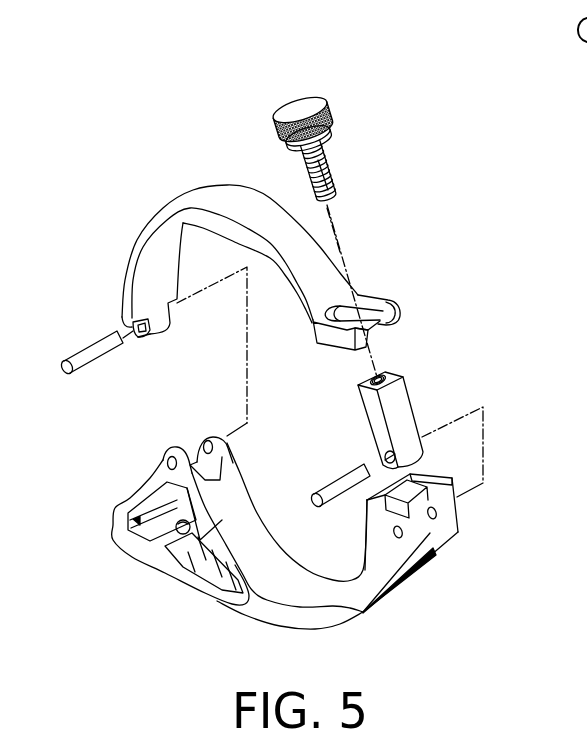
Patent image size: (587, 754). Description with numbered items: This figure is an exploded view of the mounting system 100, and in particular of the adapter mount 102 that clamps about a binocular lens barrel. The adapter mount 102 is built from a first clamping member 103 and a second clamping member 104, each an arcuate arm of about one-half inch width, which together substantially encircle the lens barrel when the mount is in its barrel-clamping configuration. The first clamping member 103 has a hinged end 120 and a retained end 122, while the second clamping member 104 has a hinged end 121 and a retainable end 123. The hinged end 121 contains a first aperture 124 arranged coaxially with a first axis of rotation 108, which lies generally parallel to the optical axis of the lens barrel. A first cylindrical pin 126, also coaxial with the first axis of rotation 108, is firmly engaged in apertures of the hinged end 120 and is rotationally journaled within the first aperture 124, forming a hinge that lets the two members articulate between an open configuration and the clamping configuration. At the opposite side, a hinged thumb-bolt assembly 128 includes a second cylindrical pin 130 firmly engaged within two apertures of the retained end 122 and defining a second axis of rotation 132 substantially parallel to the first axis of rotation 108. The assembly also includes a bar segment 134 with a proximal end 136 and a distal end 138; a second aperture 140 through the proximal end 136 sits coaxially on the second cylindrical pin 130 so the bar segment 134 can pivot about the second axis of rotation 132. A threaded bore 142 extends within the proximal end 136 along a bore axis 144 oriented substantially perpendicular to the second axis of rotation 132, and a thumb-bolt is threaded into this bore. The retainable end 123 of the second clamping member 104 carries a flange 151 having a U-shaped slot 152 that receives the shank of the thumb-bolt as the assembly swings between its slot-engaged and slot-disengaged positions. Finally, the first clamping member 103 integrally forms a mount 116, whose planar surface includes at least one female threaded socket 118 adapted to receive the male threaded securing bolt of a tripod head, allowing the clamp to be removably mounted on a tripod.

The clamp assembly 100 is at (148, 138).
The adapter mount 102 is at (131, 175).
The first clamping member 103 is at (407, 585).
The second clamping member 104 is at (133, 247).
The first axis of rotation 108 is at (132, 327).
The mount 116 is at (142, 613).
The female threaded socket 118 is at (163, 565).
The hinged end 120 is at (170, 448).
The hinged end 121 is at (153, 337).
The retained end 122 is at (462, 522).
The retainable end 123 is at (358, 295).
The first aperture 124 is at (140, 340).
The first cylindrical pin 126 is at (107, 342).
The hinged thumb-bolt assembly 128 is at (268, 45).
The second cylindrical pin 130 is at (343, 475).
The second axis of rotation 132 is at (457, 413).
The bar segment 134 is at (418, 412).
The proximal end 136 is at (418, 459).
The distal end 138 is at (410, 398).
The second aperture 140 is at (380, 456).
The threaded bore 142 is at (363, 377).
The bore axis 144 is at (340, 238).
The flange 151 is at (372, 298).
The U-shaped slot 152 is at (378, 321).